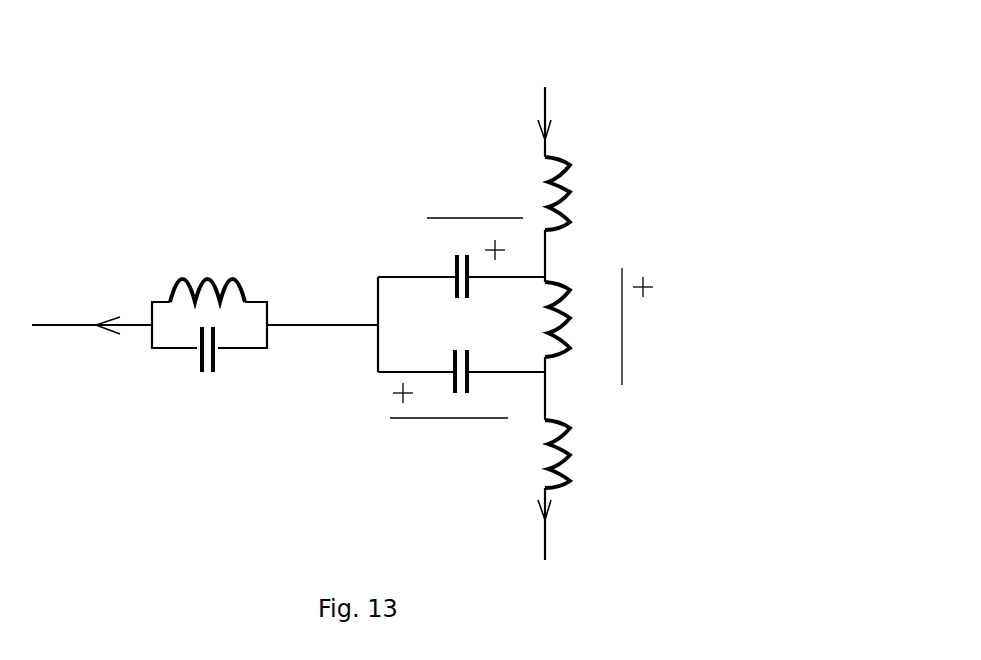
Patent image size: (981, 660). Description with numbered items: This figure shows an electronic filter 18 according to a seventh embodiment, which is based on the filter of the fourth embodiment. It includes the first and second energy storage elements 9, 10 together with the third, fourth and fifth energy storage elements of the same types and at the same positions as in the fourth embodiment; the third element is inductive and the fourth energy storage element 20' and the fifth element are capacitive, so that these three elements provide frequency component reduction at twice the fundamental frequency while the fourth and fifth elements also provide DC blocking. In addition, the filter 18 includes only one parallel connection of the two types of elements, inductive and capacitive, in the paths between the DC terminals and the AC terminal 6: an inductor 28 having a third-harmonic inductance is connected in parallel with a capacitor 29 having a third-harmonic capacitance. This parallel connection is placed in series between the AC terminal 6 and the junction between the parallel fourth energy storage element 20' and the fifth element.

The electronic filter 18 is at (218, 145).
The inductor 28 is at (178, 273).
The capacitor 29 is at (217, 360).
The AC terminal 6 is at (48, 320).
The fourth energy storage element 20' is at (435, 241).
The first energy storage element 9 is at (572, 168).
The second energy storage element 10 is at (548, 428).